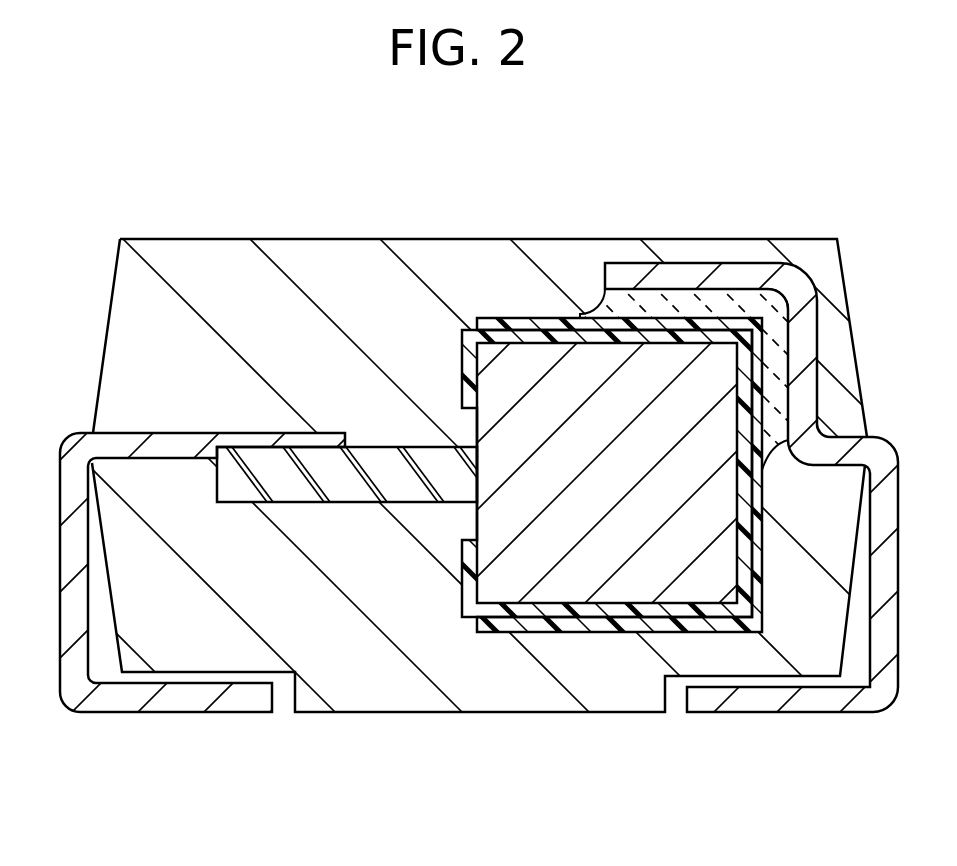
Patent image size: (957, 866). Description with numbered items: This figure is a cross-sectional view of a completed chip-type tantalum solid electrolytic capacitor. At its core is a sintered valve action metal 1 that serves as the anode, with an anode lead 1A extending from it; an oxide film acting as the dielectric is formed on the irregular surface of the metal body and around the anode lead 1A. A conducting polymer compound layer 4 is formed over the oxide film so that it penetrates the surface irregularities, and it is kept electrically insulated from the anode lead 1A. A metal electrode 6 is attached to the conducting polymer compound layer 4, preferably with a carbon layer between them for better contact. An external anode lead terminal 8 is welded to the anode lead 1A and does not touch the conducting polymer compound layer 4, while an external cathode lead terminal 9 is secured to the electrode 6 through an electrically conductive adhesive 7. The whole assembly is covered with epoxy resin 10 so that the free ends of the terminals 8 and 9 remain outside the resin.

The sintered valve action metal 1 is at (508, 590).
The anode lead 1A is at (360, 488).
The conducting polymer compound layer 4 is at (492, 326).
The electrode 6 is at (544, 318).
The electrically conductive adhesive 7 is at (737, 300).
The external anode lead terminal 8 is at (157, 700).
The external cathode lead terminal 9 is at (712, 700).
The epoxy resin 10 is at (171, 258).